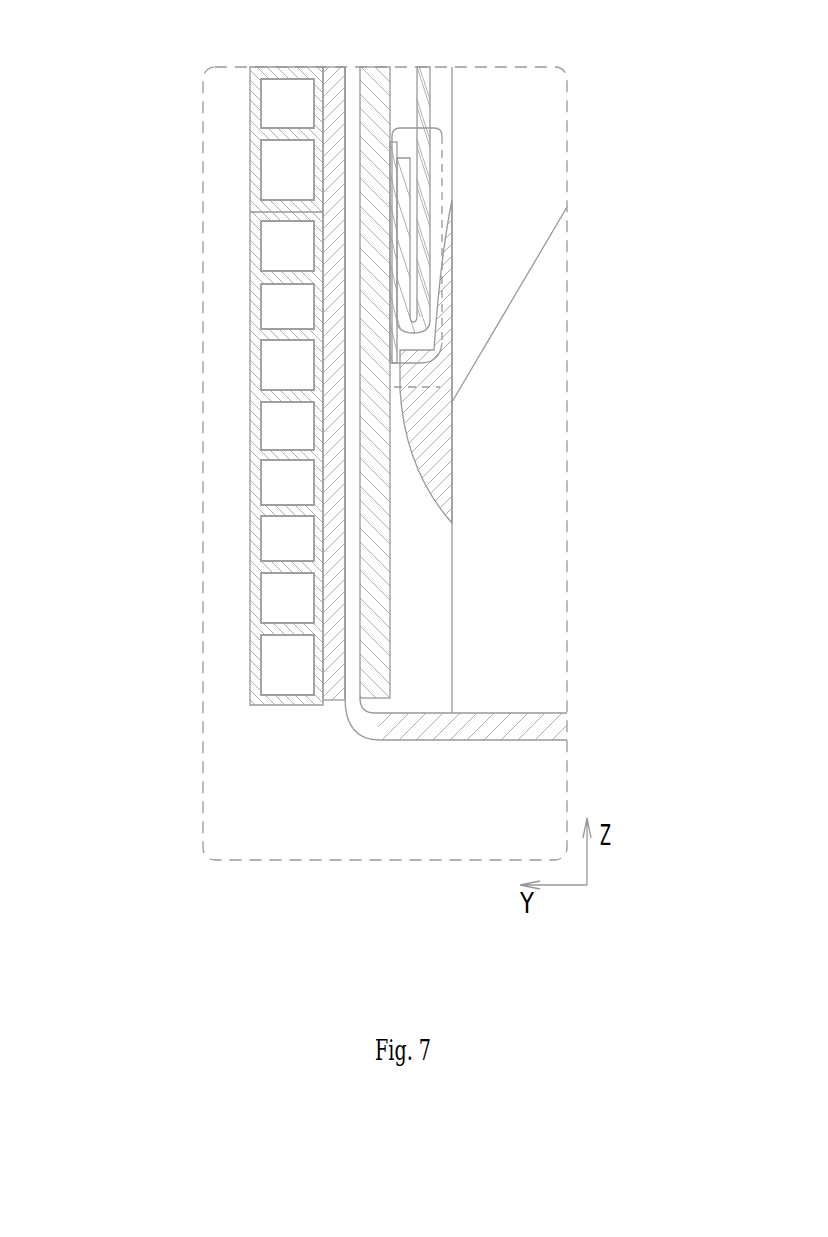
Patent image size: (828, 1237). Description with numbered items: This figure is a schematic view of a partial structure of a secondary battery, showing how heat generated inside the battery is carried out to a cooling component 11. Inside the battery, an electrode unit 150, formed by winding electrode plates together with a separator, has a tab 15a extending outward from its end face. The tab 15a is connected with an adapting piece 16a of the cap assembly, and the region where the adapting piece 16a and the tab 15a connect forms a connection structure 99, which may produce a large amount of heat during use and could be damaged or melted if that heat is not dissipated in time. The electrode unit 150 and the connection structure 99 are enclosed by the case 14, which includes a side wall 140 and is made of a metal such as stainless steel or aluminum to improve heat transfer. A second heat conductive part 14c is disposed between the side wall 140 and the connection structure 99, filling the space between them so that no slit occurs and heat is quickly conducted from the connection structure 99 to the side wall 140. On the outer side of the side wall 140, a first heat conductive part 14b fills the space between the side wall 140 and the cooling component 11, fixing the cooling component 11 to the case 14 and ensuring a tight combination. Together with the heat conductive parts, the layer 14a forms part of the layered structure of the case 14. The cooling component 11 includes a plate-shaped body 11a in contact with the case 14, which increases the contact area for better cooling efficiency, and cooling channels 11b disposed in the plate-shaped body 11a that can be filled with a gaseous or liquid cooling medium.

The cooling component 11 is at (200, 386).
The plate-shaped body 11a is at (255, 182).
The cooling channel 11b is at (285, 318).
The case 14 is at (407, 520).
The intermediate layer 14a is at (372, 727).
The first heat conductive part 14b is at (335, 700).
The second heat conductive part 14c is at (392, 690).
The side wall 140 is at (353, 417).
The tab 15a is at (433, 452).
The electrode unit 150 is at (503, 645).
The adapting piece 16a is at (422, 97).
The connection structure 99 is at (442, 136).